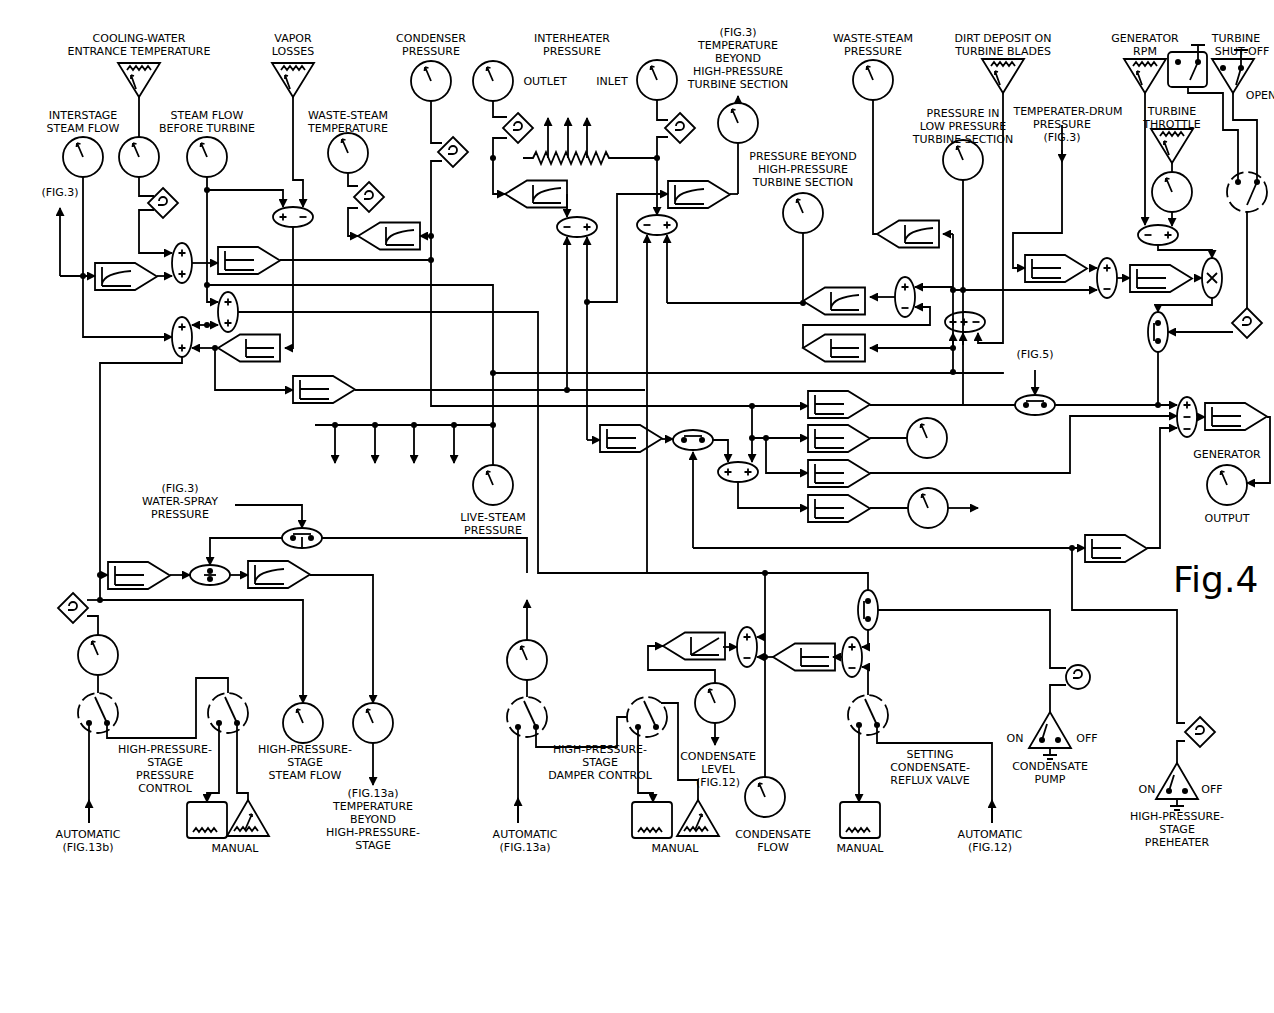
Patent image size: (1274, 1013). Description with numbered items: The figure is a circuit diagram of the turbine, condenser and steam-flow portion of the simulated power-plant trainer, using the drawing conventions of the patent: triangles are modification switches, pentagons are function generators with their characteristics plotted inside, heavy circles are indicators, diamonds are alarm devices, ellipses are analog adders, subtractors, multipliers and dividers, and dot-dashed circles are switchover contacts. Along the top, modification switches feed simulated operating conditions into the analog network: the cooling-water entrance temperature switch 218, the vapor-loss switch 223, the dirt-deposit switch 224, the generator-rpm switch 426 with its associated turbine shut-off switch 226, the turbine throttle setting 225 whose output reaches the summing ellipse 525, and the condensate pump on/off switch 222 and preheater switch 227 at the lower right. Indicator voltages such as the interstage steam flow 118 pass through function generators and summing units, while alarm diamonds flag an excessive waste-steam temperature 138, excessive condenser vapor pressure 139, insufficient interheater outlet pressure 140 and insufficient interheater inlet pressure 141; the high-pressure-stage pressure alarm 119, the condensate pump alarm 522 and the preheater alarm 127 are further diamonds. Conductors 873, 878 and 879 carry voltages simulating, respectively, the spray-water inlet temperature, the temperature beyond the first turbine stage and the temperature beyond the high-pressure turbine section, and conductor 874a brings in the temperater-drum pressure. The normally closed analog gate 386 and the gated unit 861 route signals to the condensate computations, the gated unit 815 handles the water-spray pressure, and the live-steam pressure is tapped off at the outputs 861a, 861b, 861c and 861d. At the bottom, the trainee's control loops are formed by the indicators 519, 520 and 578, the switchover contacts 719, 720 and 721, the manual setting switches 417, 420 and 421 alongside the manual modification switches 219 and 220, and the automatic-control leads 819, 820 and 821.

The interstage steam flow transmitter 118 is at (92, 175).
The high-pressure stage pressure control converter 119 is at (72, 584).
The high-pressure stage preheater converter 127 is at (1203, 717).
The excessive waste-steam temperature alarm 138 is at (392, 178).
The excessive condenser vapor pressure alarm 139 is at (458, 166).
The insufficient interheater outlet pressure alarm 140 is at (504, 130).
The insufficient interheater inlet pressure alarm 141 is at (684, 142).
The cooling-water entrance temperature modification switch 218 is at (150, 75).
The manual steam-pressure control switch 219 is at (258, 820).
The manual damper control switch 220 is at (707, 818).
The condensate pump on/off switch 222 is at (1060, 720).
The vapor loss rate switch 223 is at (304, 75).
The turbine blade dirt deposit switch 224 is at (1014, 72).
The turbine throttle setting switch 225 is at (1183, 142).
The turbine shut-off switch 226 is at (1240, 88).
The injection-water preheater switch 227 is at (1168, 777).
The normally closed analog gate 386 is at (680, 450).
The manual pressure control setter 417 is at (187, 816).
The manual damper control setter 420 is at (632, 817).
The manual condensate reflux valve setter 421 is at (880, 812).
The generator rpm setter and switch 426 is at (1168, 87).
The pressure control indicator 519 is at (119, 650).
The damper control indicator 520 is at (548, 655).
The condensate pump converter 522 is at (1088, 667).
The turbine throttle summing unit 525 is at (1183, 218).
The temperature beyond high-pressure stage indicator 578 is at (394, 718).
The automatic-manual switch pressure control 719 is at (119, 708).
The automatic-manual switch damper control 720 is at (548, 712).
The automatic-manual switch reflux valve 721 is at (889, 710).
The water-spray pressure computing unit 815 is at (302, 505).
The automatic pressure control signal line 819 is at (89, 782).
The automatic damper control signal line 820 is at (518, 787).
The automatic reflux valve signal line 821 is at (992, 797).
The condensate computing unit 861 is at (1040, 380).
The live-steam pressure signal output 861a is at (455, 457).
The live-steam pressure signal output 861b is at (403, 457).
The live-steam pressure signal output 861c is at (365, 457).
The live-steam pressure signal output 861d is at (335, 457).
The spray-water inlet temperature conductor 873 is at (958, 515).
The temperater-drum pressure signal line 874a is at (1055, 197).
The temperature beyond first turbine stage conductor 878 is at (380, 768).
The temperature beyond high-pressure turbine section conductor 879 is at (742, 102).